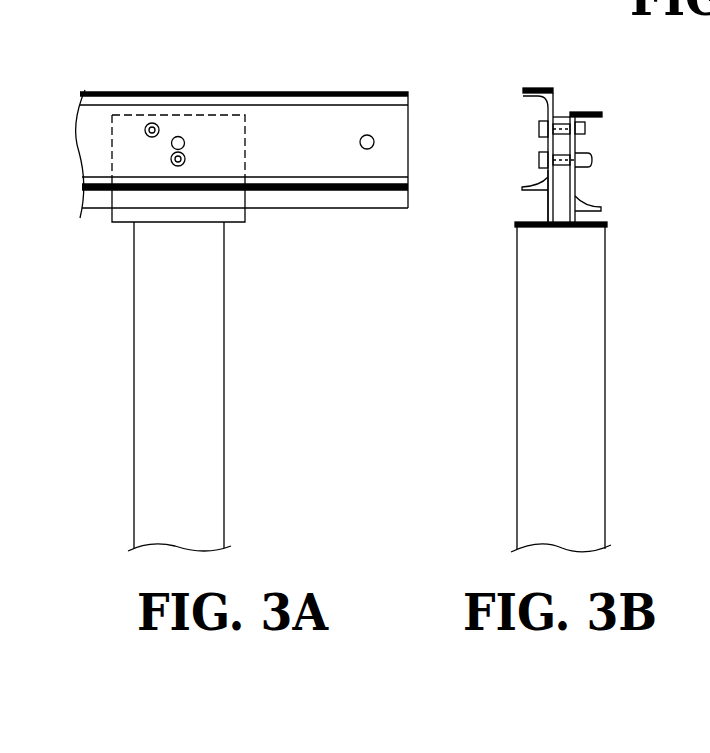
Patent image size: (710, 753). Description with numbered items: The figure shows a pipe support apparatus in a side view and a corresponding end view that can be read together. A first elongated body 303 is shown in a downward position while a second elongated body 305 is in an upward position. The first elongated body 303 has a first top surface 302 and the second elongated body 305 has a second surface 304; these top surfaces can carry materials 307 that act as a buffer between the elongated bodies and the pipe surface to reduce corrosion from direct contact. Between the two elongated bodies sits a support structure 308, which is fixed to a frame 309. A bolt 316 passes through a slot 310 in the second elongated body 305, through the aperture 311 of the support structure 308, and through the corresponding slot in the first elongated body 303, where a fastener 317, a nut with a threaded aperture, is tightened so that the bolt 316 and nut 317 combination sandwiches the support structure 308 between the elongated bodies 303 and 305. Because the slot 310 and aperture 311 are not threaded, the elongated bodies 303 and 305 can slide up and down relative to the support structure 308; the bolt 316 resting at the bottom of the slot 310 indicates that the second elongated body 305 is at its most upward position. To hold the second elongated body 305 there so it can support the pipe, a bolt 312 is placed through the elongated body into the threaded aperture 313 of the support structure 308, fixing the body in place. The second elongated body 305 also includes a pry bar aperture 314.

In FIG. 3B, the first top surface 302 is at (600, 112).
In FIG. 3A, the first elongated body 303 is at (305, 198).
In FIG. 3B, the first elongated body 303 is at (577, 135).
In FIG. 3B, the second surface 304 is at (524, 91).
In FIG. 3A, the second elongated body 305 is at (300, 104).
In FIG. 3B, the second elongated body 305 is at (547, 112).
In FIG. 3B, the materials 307 is at (534, 88).
In FIG. 3A, the support structure 308 is at (110, 200).
In FIG. 3B, the support structure 308 is at (548, 201).
In FIG. 3A, the frame 309 is at (226, 380).
In FIG. 3A, the slot 310 is at (185, 146).
In FIG. 3B, the aperture 311 is at (556, 170).
In FIG. 3A, the bolt 312 is at (153, 123).
In FIG. 3B, the bolt 312 is at (539, 129).
In FIG. 3B, the aperture 313 is at (559, 120).
In FIG. 3A, the pry bar aperture 314 is at (369, 150).
In FIG. 3A, the bolt 316 is at (171, 158).
In FIG. 3B, the bolt 316 is at (539, 161).
In FIG. 3B, the fastener 317 is at (586, 153).